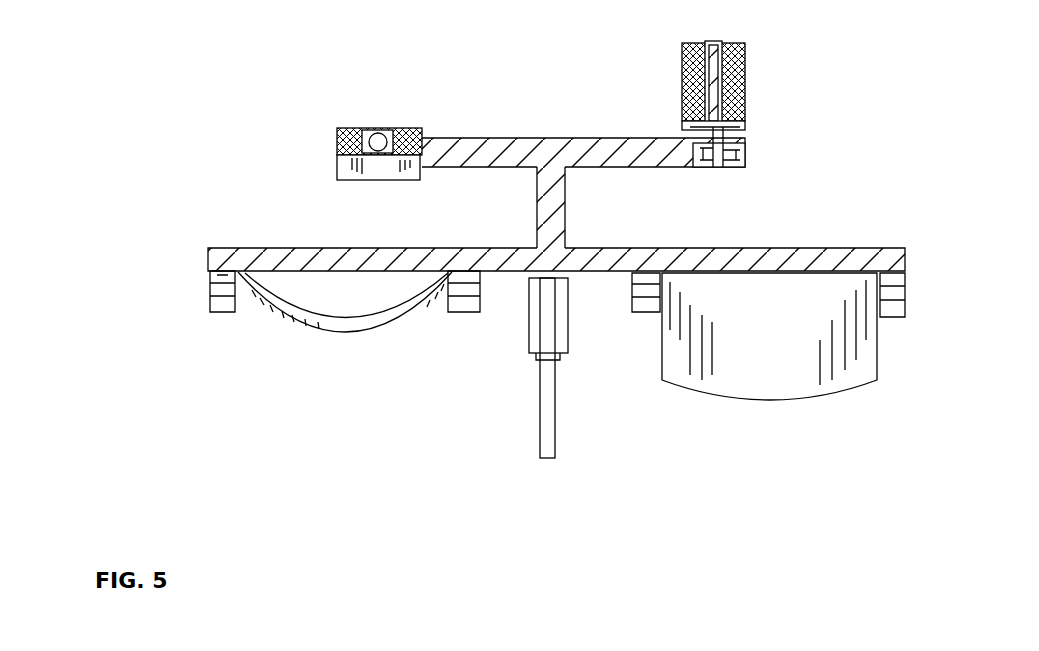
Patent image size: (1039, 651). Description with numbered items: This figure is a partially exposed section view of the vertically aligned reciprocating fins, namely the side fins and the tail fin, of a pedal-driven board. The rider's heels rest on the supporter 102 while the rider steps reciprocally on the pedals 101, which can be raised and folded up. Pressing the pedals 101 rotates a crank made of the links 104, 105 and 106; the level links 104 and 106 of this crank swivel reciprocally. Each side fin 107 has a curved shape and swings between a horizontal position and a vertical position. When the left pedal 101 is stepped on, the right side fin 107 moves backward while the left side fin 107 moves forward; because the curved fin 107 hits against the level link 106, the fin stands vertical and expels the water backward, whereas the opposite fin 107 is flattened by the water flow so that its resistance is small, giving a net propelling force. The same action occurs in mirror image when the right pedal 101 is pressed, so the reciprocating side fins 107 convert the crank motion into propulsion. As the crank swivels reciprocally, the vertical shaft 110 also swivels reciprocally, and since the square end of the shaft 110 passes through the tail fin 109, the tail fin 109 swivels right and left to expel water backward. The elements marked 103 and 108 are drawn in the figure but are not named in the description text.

The pedal 101 is at (410, 127).
The supporter 102 is at (362, 172).
The adjusting screw 103 is at (745, 152).
The level link 104 is at (623, 140).
The link 105 is at (550, 237).
The level link 106 is at (292, 255).
The side fin 107 is at (358, 330).
The clamp 108 is at (212, 288).
The tail fin 109 is at (545, 415).
The vertical shaft 110 is at (540, 276).